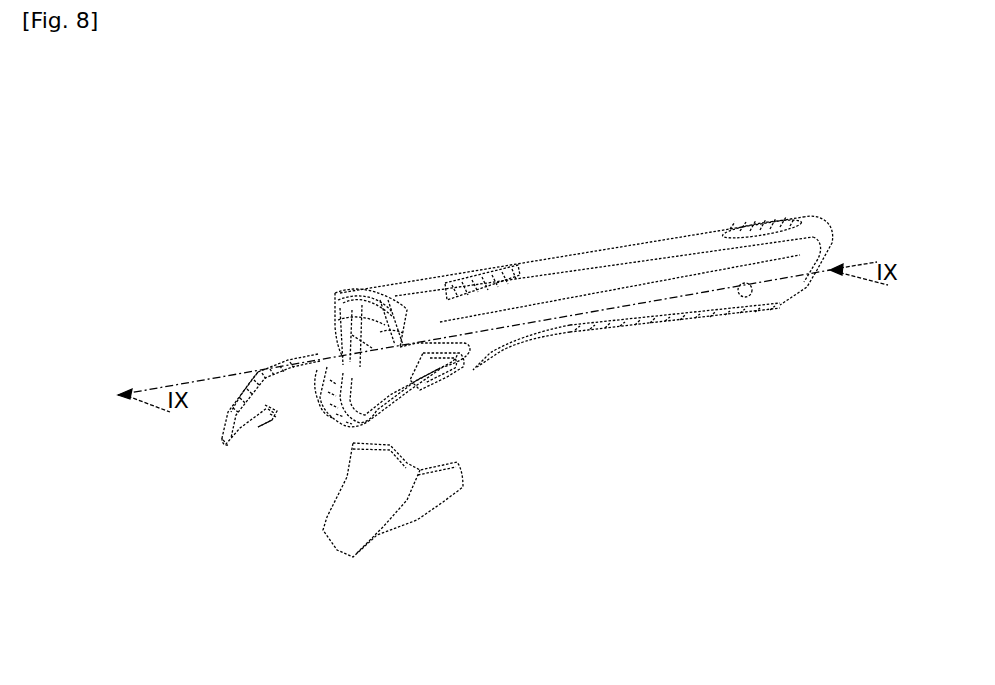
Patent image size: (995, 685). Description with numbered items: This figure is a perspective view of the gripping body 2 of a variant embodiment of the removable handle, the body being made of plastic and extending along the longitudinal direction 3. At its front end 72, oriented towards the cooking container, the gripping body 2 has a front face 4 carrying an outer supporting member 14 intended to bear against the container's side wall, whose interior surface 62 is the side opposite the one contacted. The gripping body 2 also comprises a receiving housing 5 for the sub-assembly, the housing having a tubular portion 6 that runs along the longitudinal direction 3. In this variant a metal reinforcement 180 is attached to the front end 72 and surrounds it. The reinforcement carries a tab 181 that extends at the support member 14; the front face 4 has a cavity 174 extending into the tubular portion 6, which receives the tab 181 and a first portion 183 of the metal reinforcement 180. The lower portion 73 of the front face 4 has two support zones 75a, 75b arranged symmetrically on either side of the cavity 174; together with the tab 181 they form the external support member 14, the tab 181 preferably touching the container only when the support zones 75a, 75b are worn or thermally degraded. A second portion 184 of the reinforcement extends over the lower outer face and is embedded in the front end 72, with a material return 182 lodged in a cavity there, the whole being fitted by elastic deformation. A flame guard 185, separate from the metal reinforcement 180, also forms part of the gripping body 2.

The gripping body 2 is at (283, 182).
The longitudinal direction 3 is at (785, 278).
The front face 4 is at (353, 362).
The receiving housing 5 is at (372, 313).
The tubular portion 6 is at (347, 313).
The outer supporting member 14 is at (213, 428).
The interior surface 62 is at (514, 400).
The front end 72 is at (393, 407).
The lower portion 73 is at (377, 420).
The support zone 75a is at (363, 428).
The support zone 75b is at (333, 415).
The cavity 174 is at (397, 343).
The metal reinforcement 180 is at (250, 427).
The tab 181 is at (223, 440).
The material return 182 is at (260, 427).
The first portion 183 is at (240, 385).
The second portion 184 is at (268, 423).
The flame guard 185 is at (418, 520).